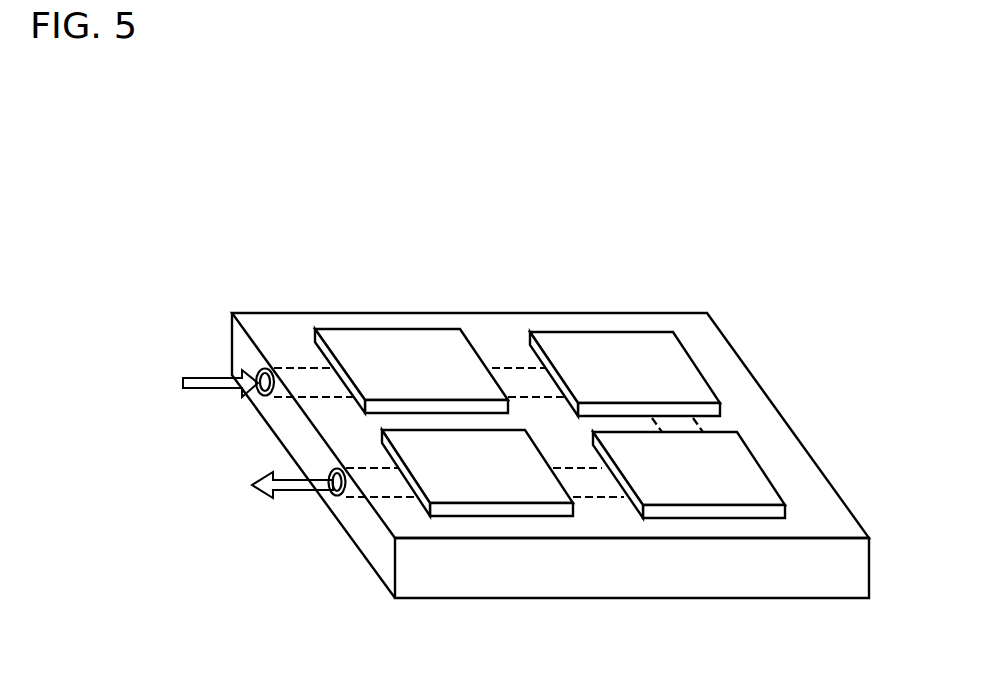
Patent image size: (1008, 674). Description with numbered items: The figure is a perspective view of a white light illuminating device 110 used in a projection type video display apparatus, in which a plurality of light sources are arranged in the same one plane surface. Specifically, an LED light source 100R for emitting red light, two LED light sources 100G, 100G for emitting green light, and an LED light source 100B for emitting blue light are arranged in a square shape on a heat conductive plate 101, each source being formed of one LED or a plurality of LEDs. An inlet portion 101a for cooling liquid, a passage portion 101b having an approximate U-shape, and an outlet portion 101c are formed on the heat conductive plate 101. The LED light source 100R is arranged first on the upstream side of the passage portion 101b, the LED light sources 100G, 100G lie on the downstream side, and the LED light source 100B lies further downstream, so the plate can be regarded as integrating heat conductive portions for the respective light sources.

The white light illuminating device 110 is at (432, 257).
The heat conductive plate 101 is at (700, 343).
The inlet portion 101a is at (257, 373).
The passage portion 101b is at (298, 368).
The outlet portion 101c is at (328, 495).
The LED light source for red 100R is at (388, 342).
The LED light source for green 100G is at (573, 353).
The LED light source for blue 100B is at (467, 497).